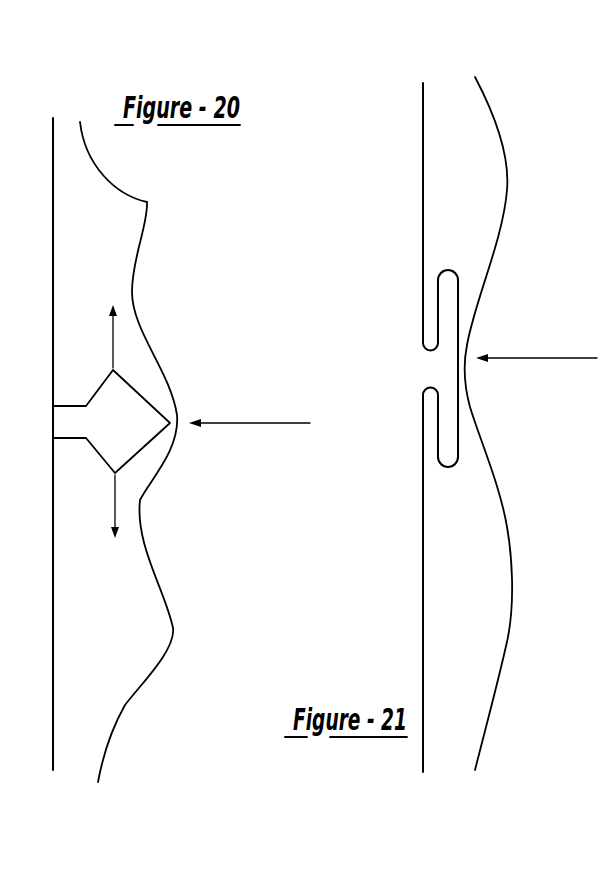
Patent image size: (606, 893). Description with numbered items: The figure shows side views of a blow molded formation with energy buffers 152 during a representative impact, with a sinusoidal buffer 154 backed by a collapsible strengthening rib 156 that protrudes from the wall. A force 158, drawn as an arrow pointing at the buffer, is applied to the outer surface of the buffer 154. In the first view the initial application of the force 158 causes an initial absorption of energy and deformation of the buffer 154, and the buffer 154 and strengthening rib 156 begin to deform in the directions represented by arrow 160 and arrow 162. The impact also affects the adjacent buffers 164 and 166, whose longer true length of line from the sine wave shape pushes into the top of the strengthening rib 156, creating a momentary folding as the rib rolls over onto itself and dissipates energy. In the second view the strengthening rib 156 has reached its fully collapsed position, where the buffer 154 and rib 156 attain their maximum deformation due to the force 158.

In FIG. 20, the blow molded (HIC) formation with energy buffers 152 is at (243, 217).
In FIG. 21, the blow molded (HIC) formation with energy buffers 152 is at (541, 192).
In FIG. 20, the buffer 154 is at (175, 440).
In FIG. 21, the buffer 154 is at (467, 375).
In FIG. 20, the strengthening rib 156 is at (100, 462).
In FIG. 21, the strengthening rib 156 is at (455, 460).
In FIG. 20, the force 158 is at (266, 427).
In FIG. 21, the force 158 is at (537, 347).
In FIG. 20, the arrow 160 is at (108, 325).
In FIG. 20, the arrow 162 is at (118, 521).
In FIG. 20, the adjacent buffer 164 is at (147, 202).
In FIG. 20, the adjacent buffer 166 is at (173, 628).